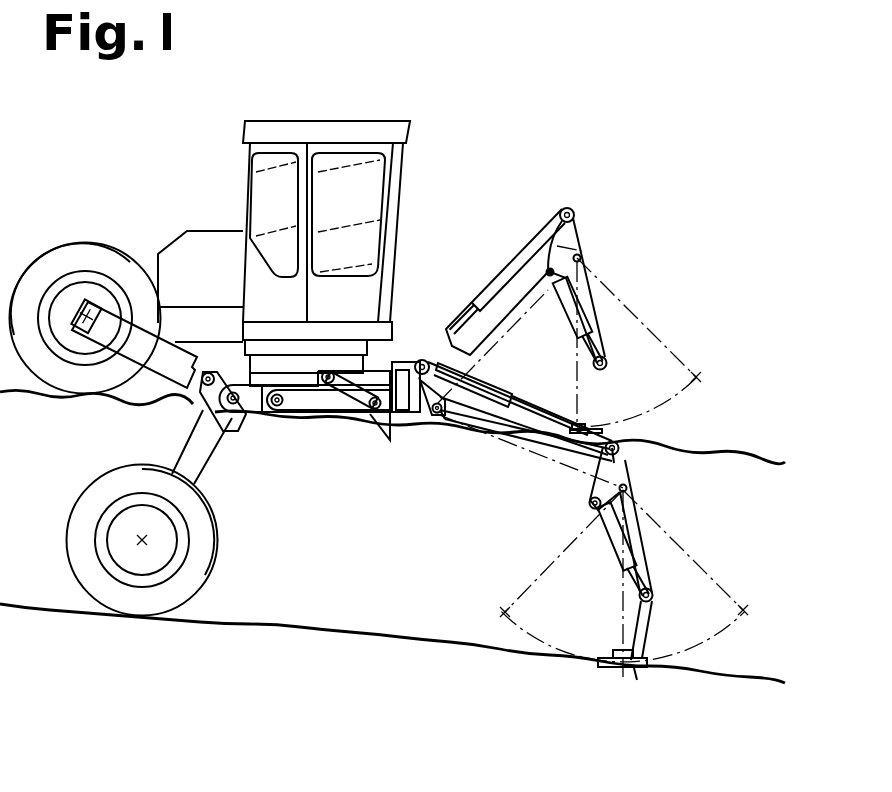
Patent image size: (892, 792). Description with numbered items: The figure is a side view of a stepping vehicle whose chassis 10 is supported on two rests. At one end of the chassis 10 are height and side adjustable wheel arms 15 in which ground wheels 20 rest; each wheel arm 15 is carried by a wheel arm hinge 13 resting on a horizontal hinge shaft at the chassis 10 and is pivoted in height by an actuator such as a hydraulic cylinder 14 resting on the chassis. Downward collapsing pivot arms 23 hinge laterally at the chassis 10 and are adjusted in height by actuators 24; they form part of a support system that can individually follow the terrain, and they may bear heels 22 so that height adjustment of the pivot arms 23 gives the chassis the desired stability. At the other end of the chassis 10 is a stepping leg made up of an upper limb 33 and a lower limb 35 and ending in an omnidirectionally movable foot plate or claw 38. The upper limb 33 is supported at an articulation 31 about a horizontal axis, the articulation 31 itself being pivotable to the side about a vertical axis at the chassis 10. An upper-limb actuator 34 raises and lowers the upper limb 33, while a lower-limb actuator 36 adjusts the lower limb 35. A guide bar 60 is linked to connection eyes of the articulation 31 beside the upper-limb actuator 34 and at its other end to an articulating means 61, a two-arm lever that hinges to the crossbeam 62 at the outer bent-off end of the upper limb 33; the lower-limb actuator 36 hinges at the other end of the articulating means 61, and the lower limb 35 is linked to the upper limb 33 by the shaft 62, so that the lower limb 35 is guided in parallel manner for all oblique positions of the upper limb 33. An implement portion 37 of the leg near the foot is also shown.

The chassis 10 is at (388, 352).
The wheel arm hinge 13 is at (243, 432).
The hydraulic cylinder 14 is at (290, 380).
The wheel arm 15 is at (198, 462).
The ground wheel 20 is at (200, 557).
The heel 22 is at (382, 430).
The pivot arm 23 is at (318, 412).
The actuator 24 is at (347, 392).
The articulation 31 is at (418, 416).
The upper limb 33 is at (565, 445).
The upper-limb actuator 34 is at (474, 366).
The lower limb 35 is at (630, 527).
The lower-limb actuator 36 is at (606, 532).
The implement tine 37 is at (652, 635).
The foot plate or claw 38 is at (640, 670).
The guide bar 60 is at (523, 402).
The articulating means 61 is at (575, 238).
The crossbeam 62 is at (582, 258).